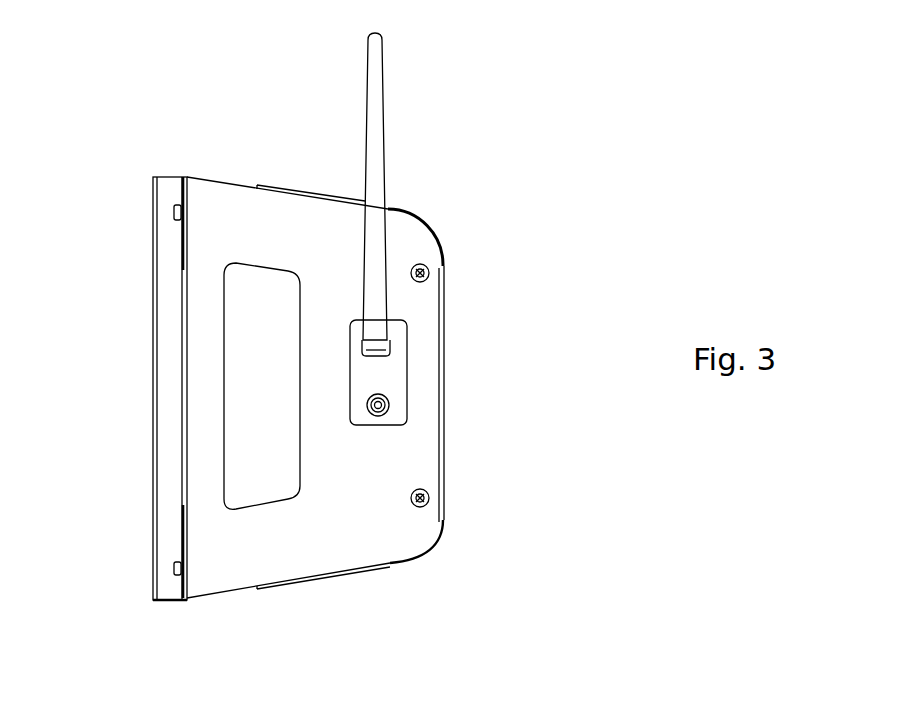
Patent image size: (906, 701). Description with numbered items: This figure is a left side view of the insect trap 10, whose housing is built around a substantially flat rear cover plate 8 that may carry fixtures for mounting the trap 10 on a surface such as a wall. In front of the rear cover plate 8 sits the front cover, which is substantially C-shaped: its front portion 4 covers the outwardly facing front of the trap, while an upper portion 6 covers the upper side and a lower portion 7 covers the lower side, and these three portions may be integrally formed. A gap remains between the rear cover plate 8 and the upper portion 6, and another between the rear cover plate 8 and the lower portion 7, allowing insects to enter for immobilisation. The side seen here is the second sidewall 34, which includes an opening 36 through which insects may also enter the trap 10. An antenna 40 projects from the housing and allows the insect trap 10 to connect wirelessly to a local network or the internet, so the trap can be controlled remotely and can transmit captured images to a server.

The front portion 4 is at (443, 387).
The upper portion 6 is at (312, 190).
The lower portion 7 is at (303, 580).
The rear cover plate 8 is at (152, 265).
The insect trap 10 is at (467, 150).
The second sidewall 34 is at (268, 547).
The openings 36 is at (262, 365).
The antenna 40 is at (383, 97).